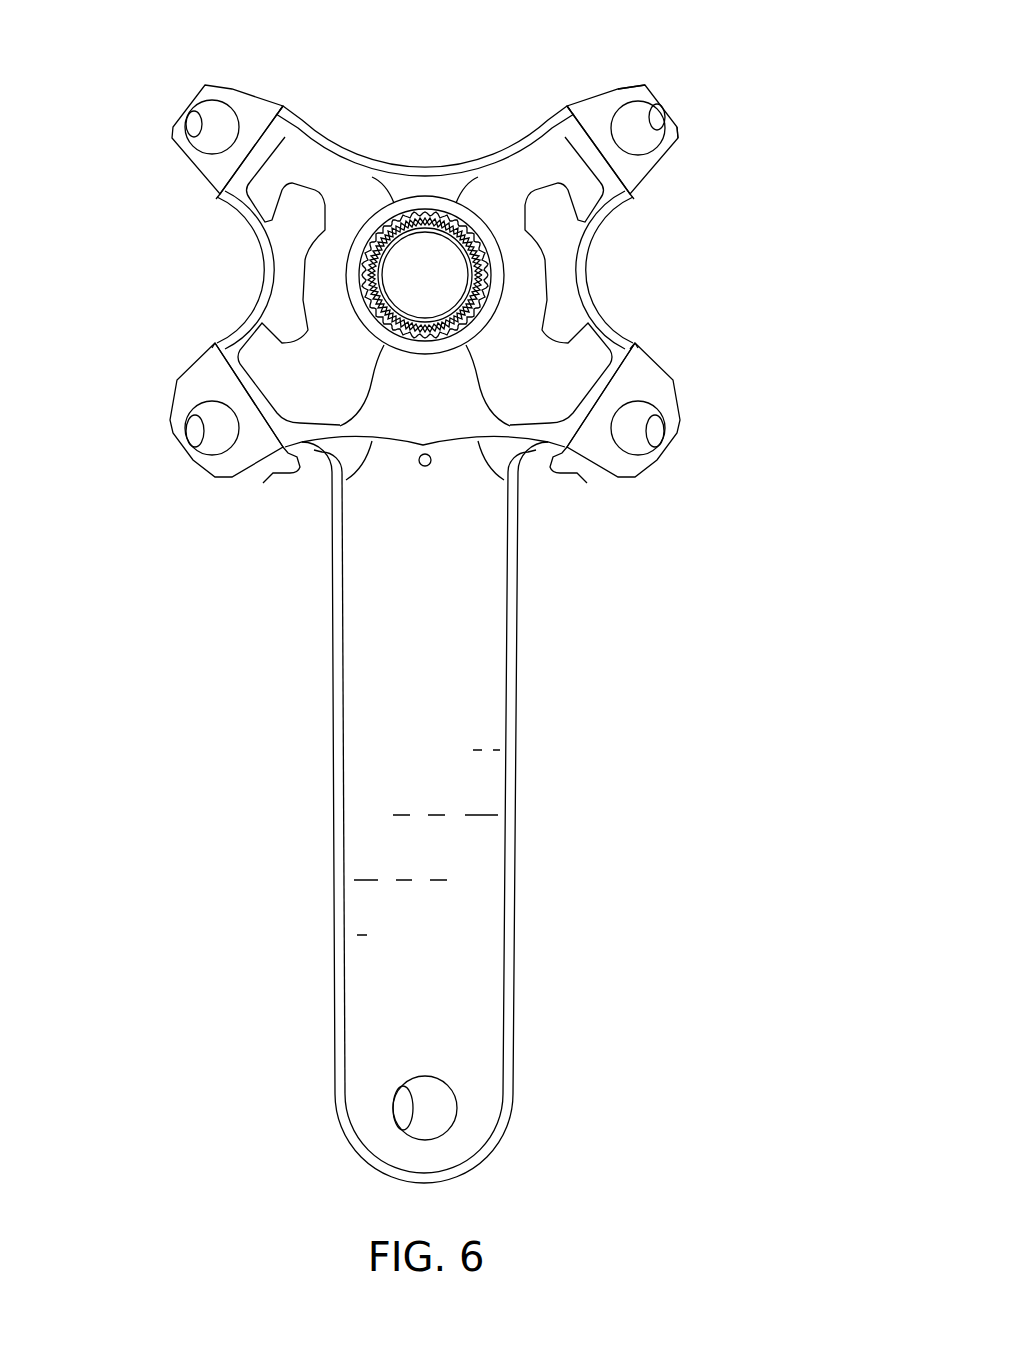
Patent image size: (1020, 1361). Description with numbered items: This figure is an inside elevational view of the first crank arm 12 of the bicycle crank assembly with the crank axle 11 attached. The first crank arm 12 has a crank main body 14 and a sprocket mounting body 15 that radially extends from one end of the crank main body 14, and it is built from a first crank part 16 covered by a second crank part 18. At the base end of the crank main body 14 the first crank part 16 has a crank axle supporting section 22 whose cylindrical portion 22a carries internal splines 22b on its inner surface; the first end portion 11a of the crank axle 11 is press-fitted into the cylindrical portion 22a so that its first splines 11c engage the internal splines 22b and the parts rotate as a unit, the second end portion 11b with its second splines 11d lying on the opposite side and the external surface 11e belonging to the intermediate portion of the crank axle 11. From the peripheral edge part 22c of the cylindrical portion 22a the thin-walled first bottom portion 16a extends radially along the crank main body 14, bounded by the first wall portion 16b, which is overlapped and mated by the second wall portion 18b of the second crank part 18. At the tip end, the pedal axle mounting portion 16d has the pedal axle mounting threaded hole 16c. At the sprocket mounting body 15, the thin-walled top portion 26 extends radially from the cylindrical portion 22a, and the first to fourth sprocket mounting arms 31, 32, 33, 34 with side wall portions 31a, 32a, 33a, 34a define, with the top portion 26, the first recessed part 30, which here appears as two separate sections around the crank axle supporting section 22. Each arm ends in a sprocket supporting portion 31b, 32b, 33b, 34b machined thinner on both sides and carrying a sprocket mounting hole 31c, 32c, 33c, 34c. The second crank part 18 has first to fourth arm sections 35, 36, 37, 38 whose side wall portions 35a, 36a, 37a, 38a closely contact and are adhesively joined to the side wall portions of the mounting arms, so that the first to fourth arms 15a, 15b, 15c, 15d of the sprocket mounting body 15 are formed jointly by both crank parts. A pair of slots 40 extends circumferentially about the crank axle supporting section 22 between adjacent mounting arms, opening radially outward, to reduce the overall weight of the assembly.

The crank axle 11 is at (427, 198).
The first end portion 11a is at (361, 250).
The second end portion 11b is at (360, 297).
The first splines 11c is at (398, 208).
The second splines 11d is at (384, 272).
The external surface 11e is at (448, 210).
The first crank arm 12 is at (441, 86).
The crank main body 14 is at (571, 700).
The sprocket mounting body 15 is at (660, 282).
The first arm 15a is at (170, 356).
The second arm 15b is at (175, 201).
The third arm 15c is at (672, 202).
The fourth arm 15d is at (675, 378).
The first crank part 16 is at (668, 75).
The first bottom portion 16a is at (466, 970).
The first wall portion 16b is at (512, 880).
The pedal axle mounting threaded hole 16c is at (410, 1123).
The pedal axle mounting portion 16d is at (434, 1151).
The second crank part 18 is at (354, 148).
The second wall portion 18b is at (338, 862).
The crank axle supporting section 22 is at (446, 362).
The cylindrical portion 22a is at (484, 212).
The internal splines 22b is at (469, 324).
The peripheral edge part 22c is at (398, 350).
The top portion 26 is at (532, 462).
The first recessed part 30 is at (310, 400).
The first sprocket mounting arm 31 is at (638, 478).
The side wall portion 31a is at (622, 363).
The first sprocket supporting portion 31b is at (673, 412).
The first sprocket mounting hole 31c is at (654, 437).
The second sprocket mounting arm 32 is at (632, 80).
The side wall portion 32a is at (541, 117).
The second sprocket supporting portion 32b is at (668, 153).
The second sprocket mounting hole 32c is at (655, 105).
The third sprocket mounting arm 33 is at (205, 82).
The side wall portion 33a is at (289, 110).
The third sprocket supporting portion 33b is at (178, 150).
The third sprocket mounting hole 33c is at (200, 112).
The fourth sprocket mounting arm 34 is at (212, 480).
The side wall portion 34a is at (217, 347).
The fourth sprocket supporting portion 34b is at (186, 399).
The fourth sprocket mounting hole 34c is at (186, 440).
The first arm section 35 is at (533, 490).
The side wall portion 35a is at (558, 452).
The second arm section 36 is at (637, 237).
The side wall portion 36a is at (543, 123).
The third arm section 37 is at (227, 233).
The side wall portion 37a is at (310, 133).
The fourth arm section 38 is at (227, 313).
The side wall portion 38a is at (287, 470).
The slots 40 is at (286, 266).